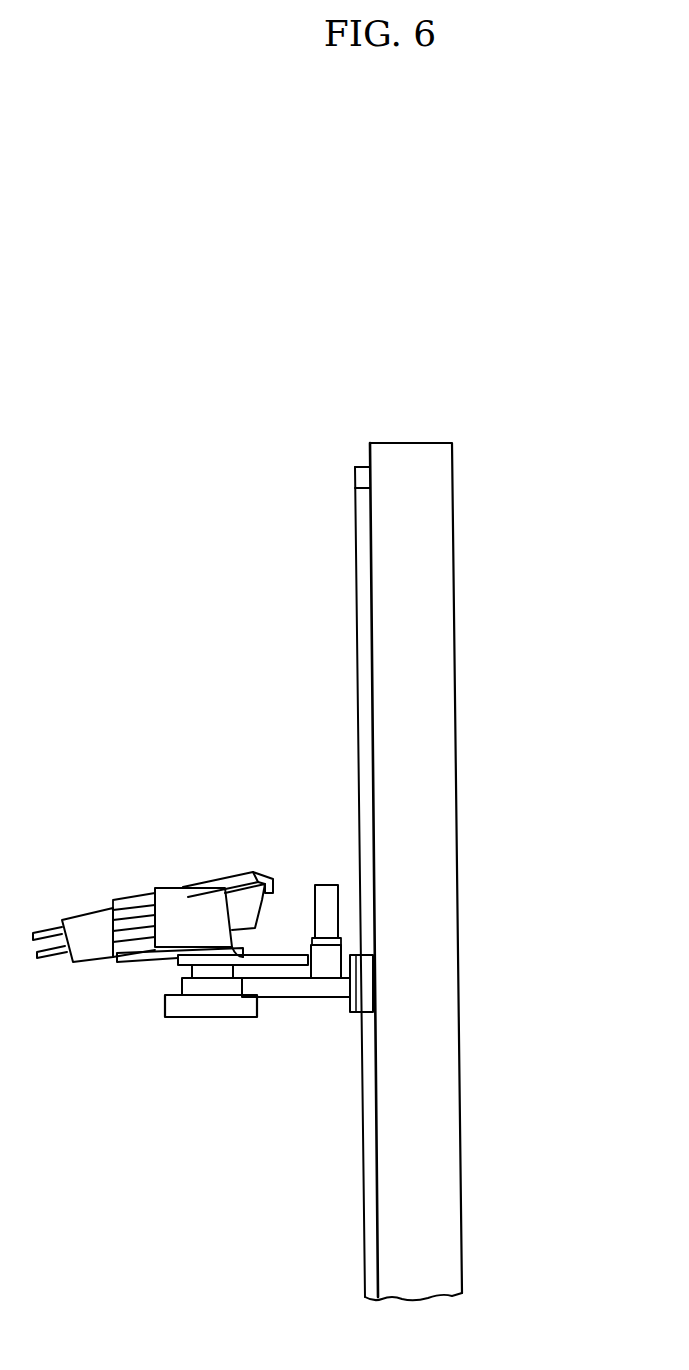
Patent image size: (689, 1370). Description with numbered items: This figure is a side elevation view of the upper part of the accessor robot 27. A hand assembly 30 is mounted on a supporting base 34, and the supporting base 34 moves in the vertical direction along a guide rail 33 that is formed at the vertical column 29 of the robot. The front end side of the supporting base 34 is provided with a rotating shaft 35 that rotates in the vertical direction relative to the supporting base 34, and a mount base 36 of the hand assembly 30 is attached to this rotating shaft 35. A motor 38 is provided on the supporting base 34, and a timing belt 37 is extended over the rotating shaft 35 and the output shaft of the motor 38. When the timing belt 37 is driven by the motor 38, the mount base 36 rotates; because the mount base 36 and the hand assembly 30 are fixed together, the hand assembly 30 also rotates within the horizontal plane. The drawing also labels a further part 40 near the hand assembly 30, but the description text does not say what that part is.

The accessor robot 27 is at (477, 715).
The vertical column 29 is at (437, 805).
The hand assembly 30 is at (147, 860).
The guide rail 33 is at (360, 520).
The supporting base 34 is at (292, 987).
The rotating shaft 35 is at (210, 973).
The mount base 36 is at (147, 957).
The timing belt 37 is at (288, 955).
The motor 38 is at (337, 885).
The housing cover 40 is at (267, 880).